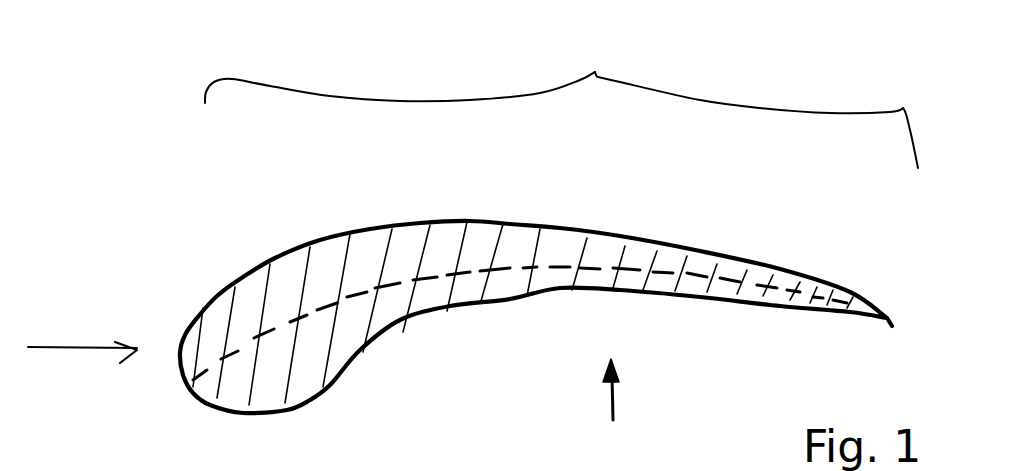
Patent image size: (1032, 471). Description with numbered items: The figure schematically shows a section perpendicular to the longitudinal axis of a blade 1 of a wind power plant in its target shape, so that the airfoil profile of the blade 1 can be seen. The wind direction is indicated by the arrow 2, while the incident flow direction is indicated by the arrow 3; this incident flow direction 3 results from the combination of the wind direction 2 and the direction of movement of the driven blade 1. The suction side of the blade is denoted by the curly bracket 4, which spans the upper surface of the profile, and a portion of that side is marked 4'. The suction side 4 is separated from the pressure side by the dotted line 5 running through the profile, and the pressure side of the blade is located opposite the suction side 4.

The blade 1 is at (457, 220).
The arrow indicating the wind direction 2 is at (668, 400).
The arrow indicating the incident flow direction 3 is at (76, 340).
The curly bracket denoting the suction side 4 is at (561, 85).
The suction side surface portion 4' is at (632, 176).
The dotted line 5 is at (189, 391).